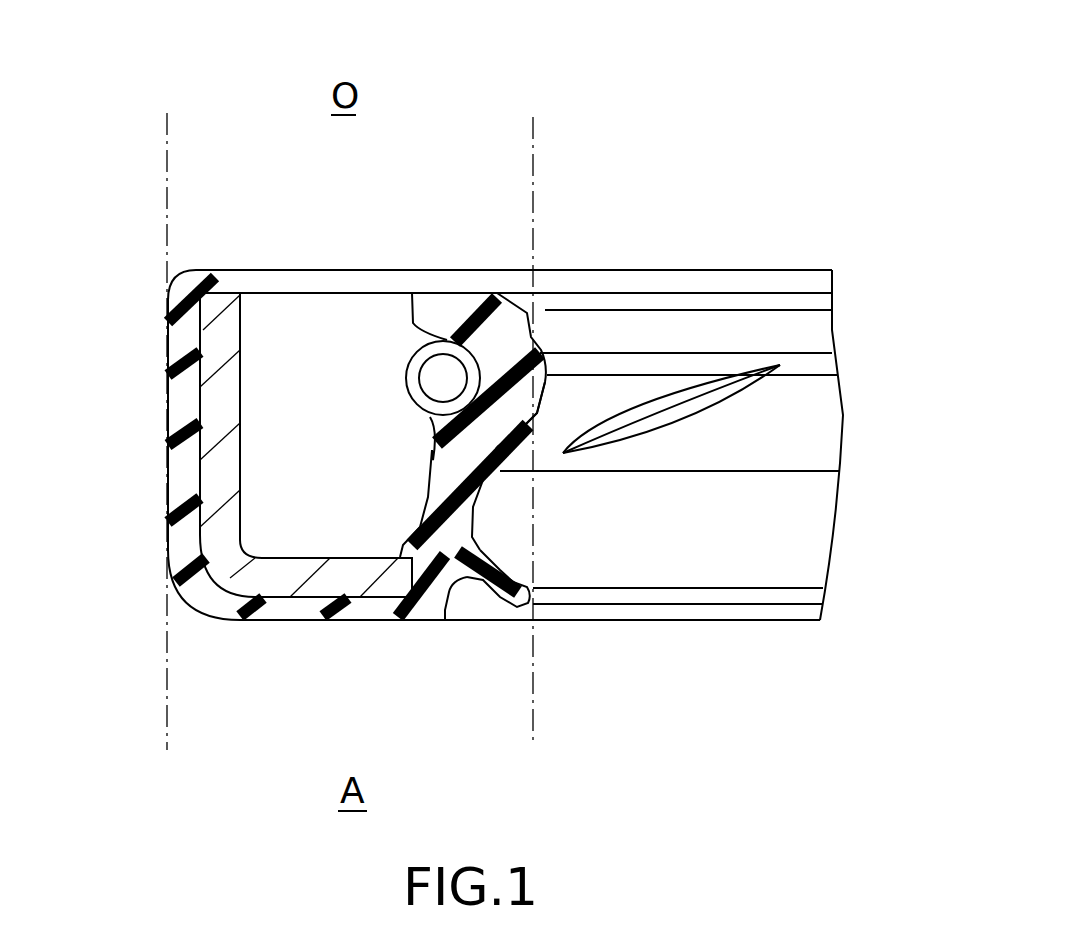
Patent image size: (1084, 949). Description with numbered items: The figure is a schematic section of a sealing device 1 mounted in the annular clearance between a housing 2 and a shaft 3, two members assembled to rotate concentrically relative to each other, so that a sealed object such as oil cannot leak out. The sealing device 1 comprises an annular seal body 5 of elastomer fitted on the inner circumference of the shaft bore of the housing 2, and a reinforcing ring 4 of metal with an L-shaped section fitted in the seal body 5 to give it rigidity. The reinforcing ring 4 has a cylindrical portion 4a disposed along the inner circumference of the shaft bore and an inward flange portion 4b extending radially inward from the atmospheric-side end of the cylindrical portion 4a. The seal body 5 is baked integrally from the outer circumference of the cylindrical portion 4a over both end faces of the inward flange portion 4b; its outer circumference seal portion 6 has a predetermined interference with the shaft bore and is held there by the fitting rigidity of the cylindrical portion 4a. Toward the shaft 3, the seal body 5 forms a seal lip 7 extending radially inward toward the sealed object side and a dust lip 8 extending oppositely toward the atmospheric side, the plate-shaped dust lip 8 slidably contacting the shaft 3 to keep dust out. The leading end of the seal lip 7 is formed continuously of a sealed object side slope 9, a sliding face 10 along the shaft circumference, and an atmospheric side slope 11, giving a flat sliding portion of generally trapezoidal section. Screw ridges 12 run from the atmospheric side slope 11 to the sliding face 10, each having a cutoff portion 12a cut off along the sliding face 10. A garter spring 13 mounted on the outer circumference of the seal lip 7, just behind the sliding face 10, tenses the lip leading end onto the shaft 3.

The sealing device 1 is at (442, 158).
The housing 2 is at (167, 215).
The shaft 3 is at (533, 157).
The reinforcing ring 4 is at (262, 565).
The cylindrical portion 4a is at (215, 450).
The inward flange portion 4b is at (331, 582).
The seal body 5 is at (447, 600).
The outer circumference seal portion 6 is at (168, 378).
The seal lip 7 is at (453, 310).
The dust lip 8 is at (507, 613).
The sealed object side slope 9 is at (537, 348).
The sliding face 10 is at (550, 373).
The atmospheric side slope 11 is at (540, 457).
The screw ridge 12 is at (540, 408).
The cutoff portion 12a is at (545, 383).
The garter spring 13 is at (407, 390).